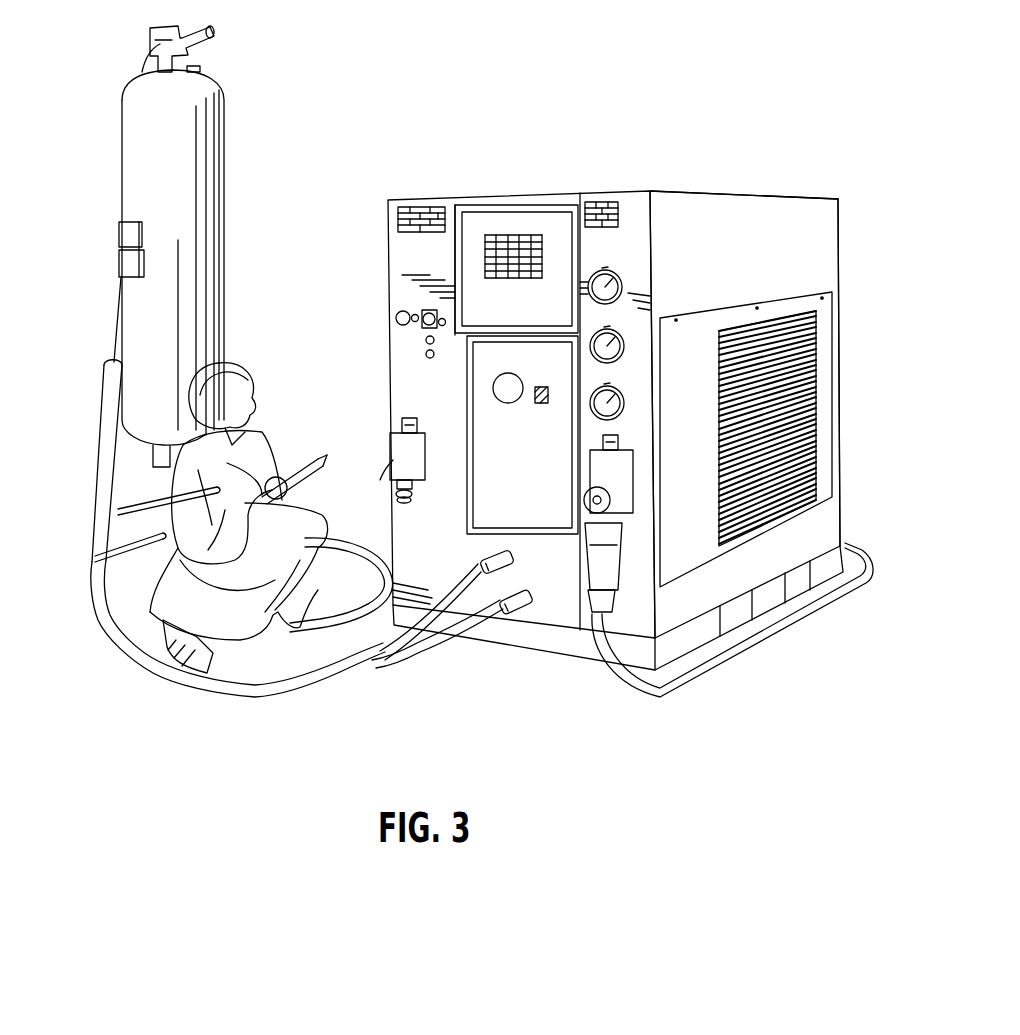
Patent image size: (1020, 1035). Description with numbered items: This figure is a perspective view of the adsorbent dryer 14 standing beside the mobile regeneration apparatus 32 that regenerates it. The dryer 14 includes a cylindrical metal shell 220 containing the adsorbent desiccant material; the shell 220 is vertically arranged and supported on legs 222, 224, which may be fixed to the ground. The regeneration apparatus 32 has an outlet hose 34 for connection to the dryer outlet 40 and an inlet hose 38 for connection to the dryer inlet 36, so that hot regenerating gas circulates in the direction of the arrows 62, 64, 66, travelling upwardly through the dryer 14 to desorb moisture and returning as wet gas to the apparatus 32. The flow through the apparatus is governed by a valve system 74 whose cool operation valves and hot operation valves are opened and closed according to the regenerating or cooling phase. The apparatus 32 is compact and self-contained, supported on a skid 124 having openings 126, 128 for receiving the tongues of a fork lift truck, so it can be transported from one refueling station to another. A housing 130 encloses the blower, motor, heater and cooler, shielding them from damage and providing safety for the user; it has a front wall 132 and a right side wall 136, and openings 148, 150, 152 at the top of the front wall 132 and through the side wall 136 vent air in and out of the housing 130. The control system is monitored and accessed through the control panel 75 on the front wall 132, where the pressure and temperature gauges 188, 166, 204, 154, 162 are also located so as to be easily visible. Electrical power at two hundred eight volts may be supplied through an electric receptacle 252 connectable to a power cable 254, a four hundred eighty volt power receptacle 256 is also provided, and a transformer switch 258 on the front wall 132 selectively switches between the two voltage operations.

The adsorbent dryer 14 is at (274, 142).
The mobile regeneration apparatus 32 is at (716, 172).
The outlet hose 34 is at (380, 664).
The dryer inlet 36 is at (190, 64).
The inlet hose 38 is at (104, 634).
The dryer outlet 40 is at (148, 432).
The arrow 62 is at (470, 657).
The arrow 64 is at (103, 230).
The arrow 66 is at (318, 696).
The valve system 74 is at (552, 594).
The control panel 75 is at (518, 238).
The skid 124 is at (836, 542).
The opening 126 is at (738, 628).
The opening 128 is at (798, 594).
The housing 130 is at (840, 250).
The front wall 132 is at (446, 561).
The right side wall 136 is at (773, 249).
The opening 148 is at (420, 207).
The opening 150 is at (601, 204).
The opening 152 is at (820, 386).
The gauge 154 is at (626, 348).
The gauge 162 is at (626, 406).
The gauge 166 is at (436, 338).
The gauge 188 is at (396, 318).
The gauge 204 is at (622, 278).
The cylindrical metal shell 220 is at (224, 230).
The leg 222 is at (100, 456).
The leg 224 is at (252, 444).
The electric receptacle 252 is at (634, 478).
The power cable 254 is at (846, 588).
The power receptacle 256 is at (392, 462).
The transformer switch 258 is at (545, 404).